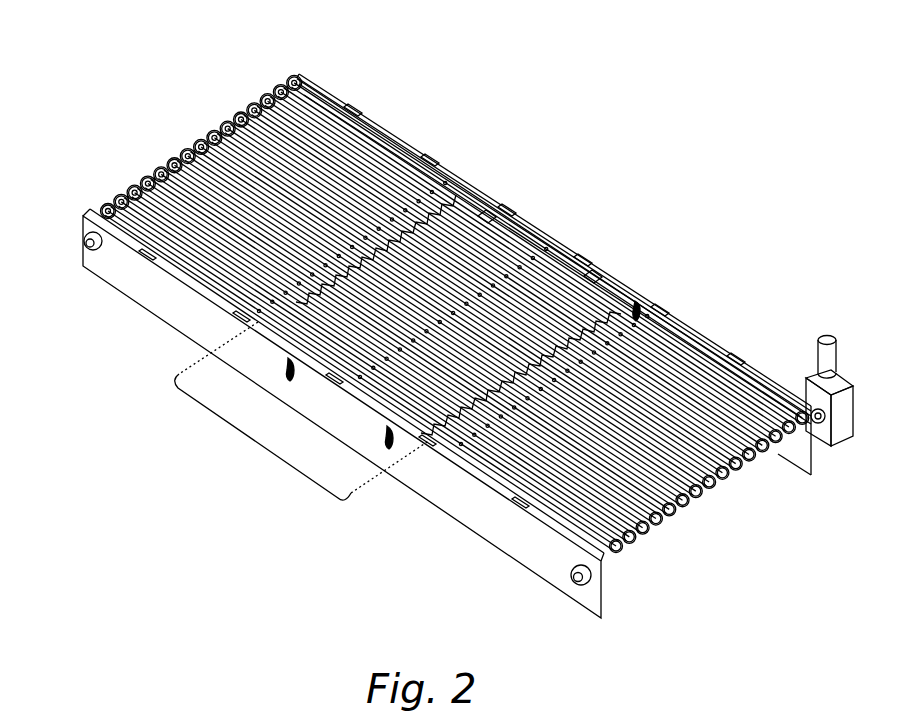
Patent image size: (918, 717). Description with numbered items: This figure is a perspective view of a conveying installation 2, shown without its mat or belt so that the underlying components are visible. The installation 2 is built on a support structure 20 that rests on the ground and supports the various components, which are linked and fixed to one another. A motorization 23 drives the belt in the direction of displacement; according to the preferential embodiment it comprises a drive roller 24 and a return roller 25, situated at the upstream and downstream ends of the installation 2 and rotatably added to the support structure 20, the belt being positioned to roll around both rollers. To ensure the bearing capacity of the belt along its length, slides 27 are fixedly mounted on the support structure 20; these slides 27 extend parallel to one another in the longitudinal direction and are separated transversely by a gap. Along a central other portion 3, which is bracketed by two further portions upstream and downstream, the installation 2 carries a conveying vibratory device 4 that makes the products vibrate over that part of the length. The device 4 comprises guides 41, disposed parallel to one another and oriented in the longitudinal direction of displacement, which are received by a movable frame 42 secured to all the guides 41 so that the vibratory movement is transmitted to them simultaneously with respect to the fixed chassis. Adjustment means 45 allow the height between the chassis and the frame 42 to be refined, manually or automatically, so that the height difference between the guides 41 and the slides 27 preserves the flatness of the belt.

The installation 2 is at (138, 360).
The other portion 3 is at (230, 433).
The conveying vibratory device 4 is at (562, 242).
The support structure 20 is at (163, 288).
The motorization 23 is at (840, 446).
The drive roller 24 is at (690, 505).
The return roller 25 is at (178, 152).
The slides 27 is at (660, 367).
The guides 41 is at (478, 216).
The movable frame 42 is at (583, 270).
The adjustment means 45 is at (360, 424).